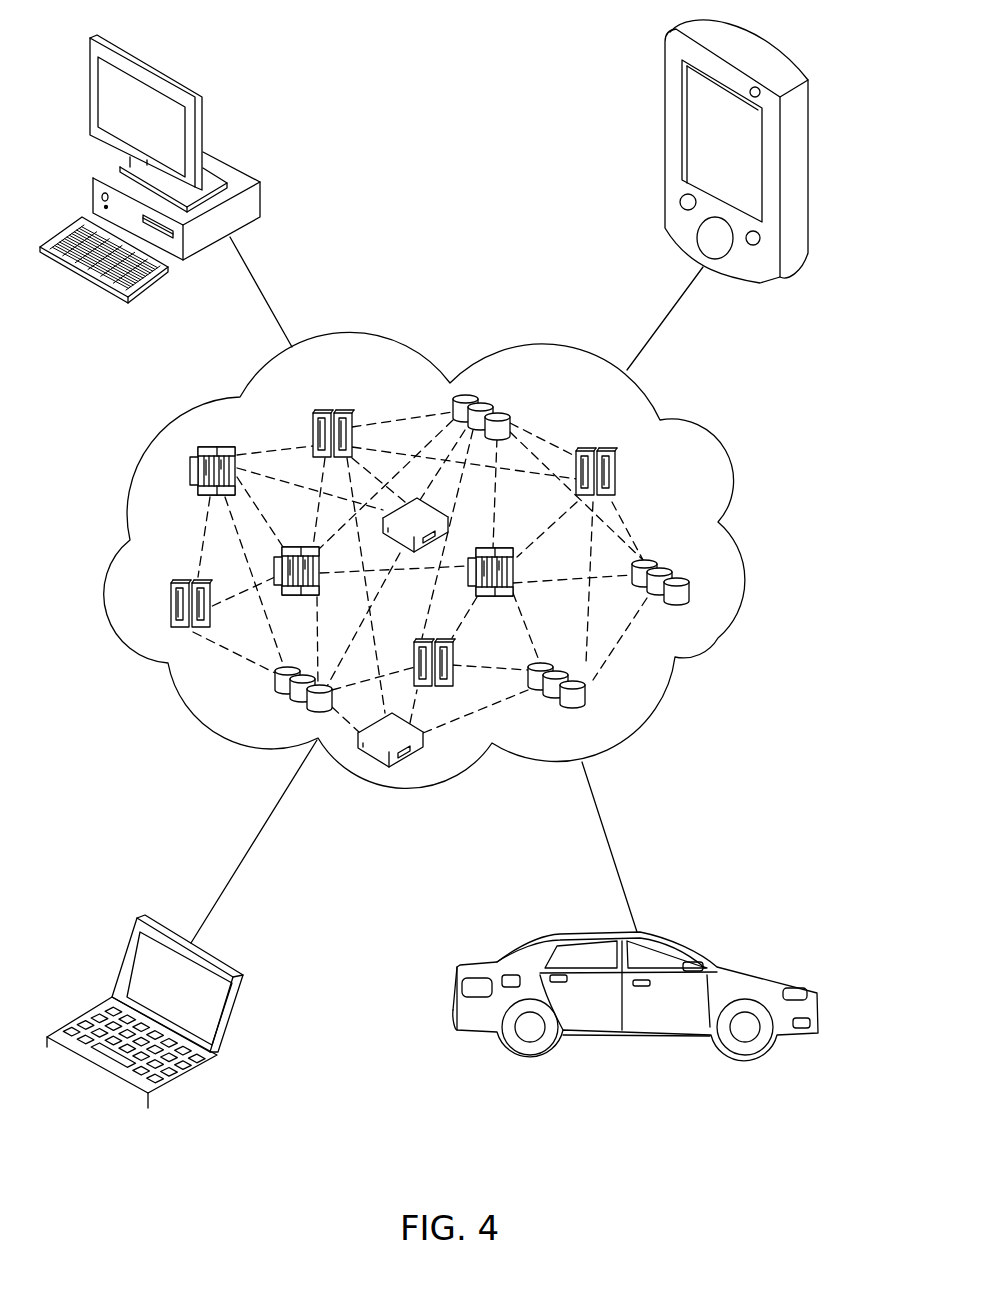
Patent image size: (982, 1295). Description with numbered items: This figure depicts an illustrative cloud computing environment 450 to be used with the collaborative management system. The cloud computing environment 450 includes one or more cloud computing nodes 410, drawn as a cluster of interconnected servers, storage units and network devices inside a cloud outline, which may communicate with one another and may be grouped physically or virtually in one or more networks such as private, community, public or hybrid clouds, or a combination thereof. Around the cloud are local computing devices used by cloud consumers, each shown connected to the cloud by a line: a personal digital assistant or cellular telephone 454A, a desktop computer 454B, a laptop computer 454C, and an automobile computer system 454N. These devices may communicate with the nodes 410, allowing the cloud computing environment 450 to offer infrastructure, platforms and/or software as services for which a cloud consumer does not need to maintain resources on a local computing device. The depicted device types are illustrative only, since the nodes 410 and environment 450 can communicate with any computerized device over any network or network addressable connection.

The cloud computing nodes 410 is at (670, 497).
The cloud computing environment 450 is at (718, 638).
The personal digital assistant (PDA) or cellular telephone 454A is at (662, 95).
The desktop computer 454B is at (263, 200).
The laptop computer 454C is at (243, 987).
The automobile computer system 454N is at (817, 993).